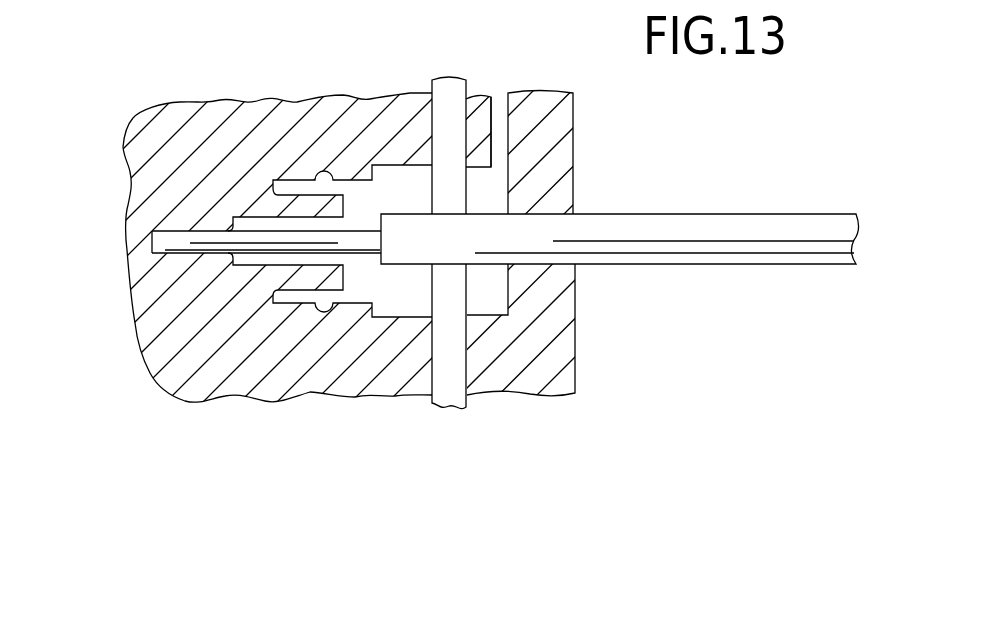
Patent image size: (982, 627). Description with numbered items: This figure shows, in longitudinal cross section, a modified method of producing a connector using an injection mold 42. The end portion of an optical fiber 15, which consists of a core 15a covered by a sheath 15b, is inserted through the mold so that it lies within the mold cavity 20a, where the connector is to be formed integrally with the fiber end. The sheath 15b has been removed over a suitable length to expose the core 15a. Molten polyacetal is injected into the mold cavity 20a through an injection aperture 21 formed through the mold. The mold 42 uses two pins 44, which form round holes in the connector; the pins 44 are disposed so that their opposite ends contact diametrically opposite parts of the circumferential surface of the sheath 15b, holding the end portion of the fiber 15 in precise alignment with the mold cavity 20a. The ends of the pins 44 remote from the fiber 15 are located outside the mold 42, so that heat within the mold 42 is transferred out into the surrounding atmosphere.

The optical fiber 15 is at (692, 244).
The core 15a is at (158, 242).
The sheath 15b is at (575, 245).
The mold cavity 20a is at (400, 292).
The injection aperture 21 is at (500, 107).
The injection mold 42 is at (545, 151).
The pins 44 is at (448, 90).